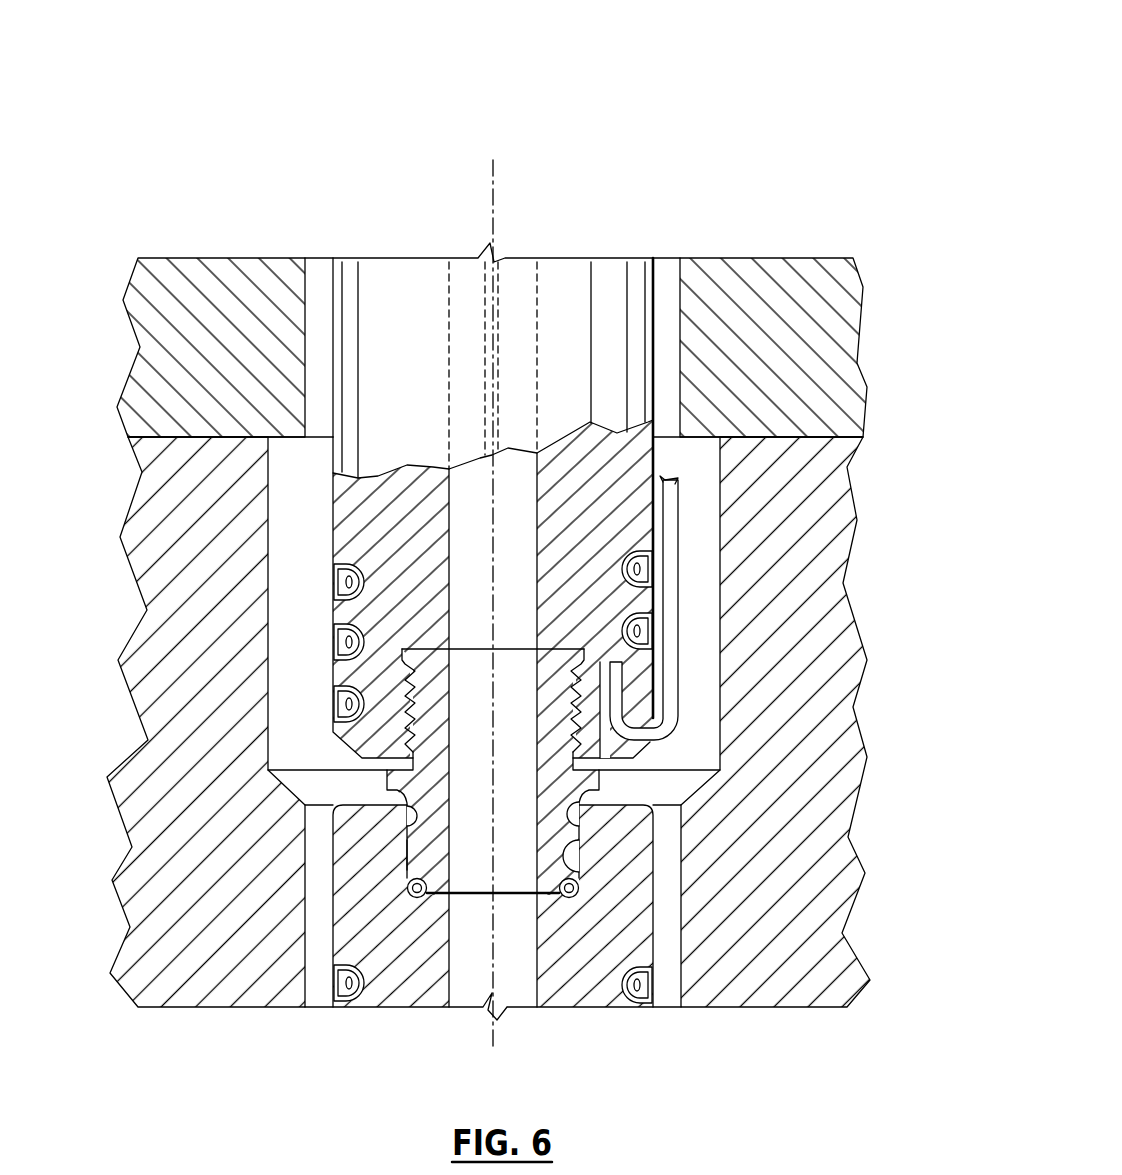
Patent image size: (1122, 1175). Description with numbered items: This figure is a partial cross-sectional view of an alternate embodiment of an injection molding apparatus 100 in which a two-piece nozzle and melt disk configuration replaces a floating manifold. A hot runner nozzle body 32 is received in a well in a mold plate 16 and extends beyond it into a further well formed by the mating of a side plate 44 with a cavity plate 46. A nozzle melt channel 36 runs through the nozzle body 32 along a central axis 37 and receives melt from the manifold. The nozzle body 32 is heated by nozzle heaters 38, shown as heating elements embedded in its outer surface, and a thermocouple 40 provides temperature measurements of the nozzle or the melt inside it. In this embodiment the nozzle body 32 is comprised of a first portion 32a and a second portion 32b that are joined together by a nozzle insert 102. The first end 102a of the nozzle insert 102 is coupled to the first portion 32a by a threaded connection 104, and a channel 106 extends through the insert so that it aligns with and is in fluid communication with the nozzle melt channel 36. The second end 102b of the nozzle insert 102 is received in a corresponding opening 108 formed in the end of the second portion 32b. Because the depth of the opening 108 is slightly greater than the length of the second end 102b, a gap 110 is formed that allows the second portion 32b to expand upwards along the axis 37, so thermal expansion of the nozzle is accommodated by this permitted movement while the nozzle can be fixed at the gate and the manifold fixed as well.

The injection molding apparatus 100 is at (803, 98).
The mold plate 16 is at (875, 258).
The nozzle body 32 is at (619, 258).
The first portion of nozzle body 32a is at (615, 510).
The second portion of nozzle body 32b is at (353, 873).
The nozzle melt channel 36 is at (485, 523).
The central axis 37 is at (494, 198).
The nozzle heater 38 is at (342, 565).
The thermocouple 40 is at (672, 620).
The side plate 44 is at (818, 481).
The cavity plate 46 is at (130, 537).
The nozzle insert 102 is at (563, 840).
The first end of nozzle insert 102a is at (425, 667).
The second end of nozzle insert 102b is at (403, 865).
The threaded connection 104 is at (420, 722).
The channel 106 is at (523, 705).
The opening 108 is at (573, 866).
The gap 110 is at (549, 897).